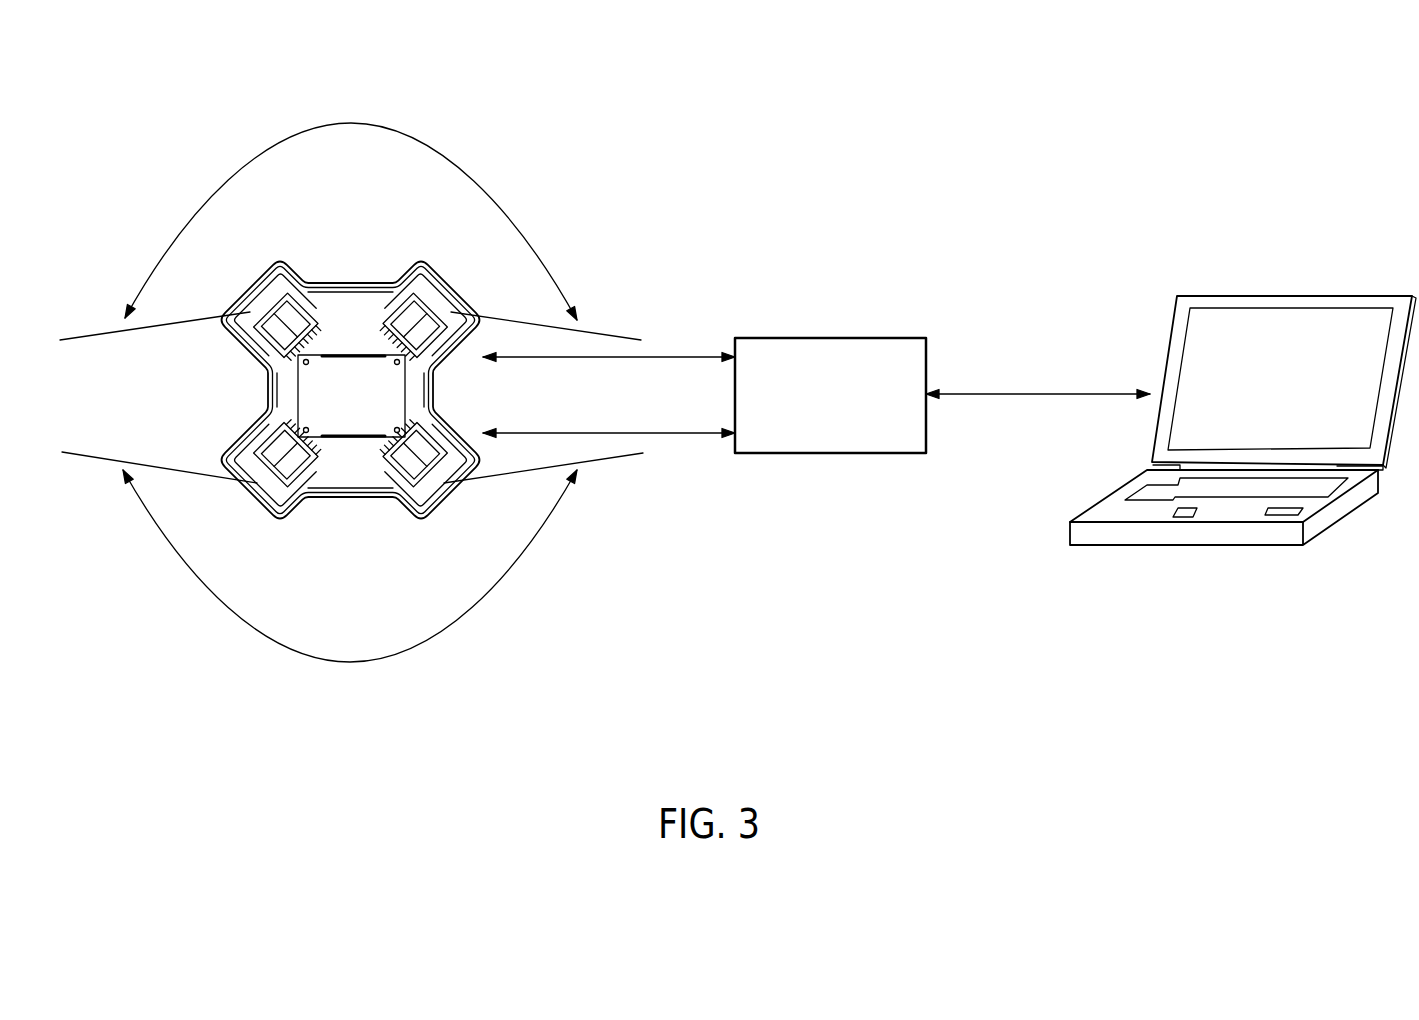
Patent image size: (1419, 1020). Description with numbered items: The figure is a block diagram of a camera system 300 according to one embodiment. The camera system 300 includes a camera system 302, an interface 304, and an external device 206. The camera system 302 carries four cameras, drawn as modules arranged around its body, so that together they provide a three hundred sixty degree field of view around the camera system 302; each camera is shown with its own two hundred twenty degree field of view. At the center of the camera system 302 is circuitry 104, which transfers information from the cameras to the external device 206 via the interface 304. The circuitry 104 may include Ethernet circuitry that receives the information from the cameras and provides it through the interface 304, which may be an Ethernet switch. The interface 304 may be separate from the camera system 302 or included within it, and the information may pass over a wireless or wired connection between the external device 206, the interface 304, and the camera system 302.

The circuitry 104 is at (348, 425).
The camera system 302 is at (351, 392).
The interface 304 is at (883, 338).
The external device 206 is at (1372, 296).
The camera system 300 is at (738, 404).